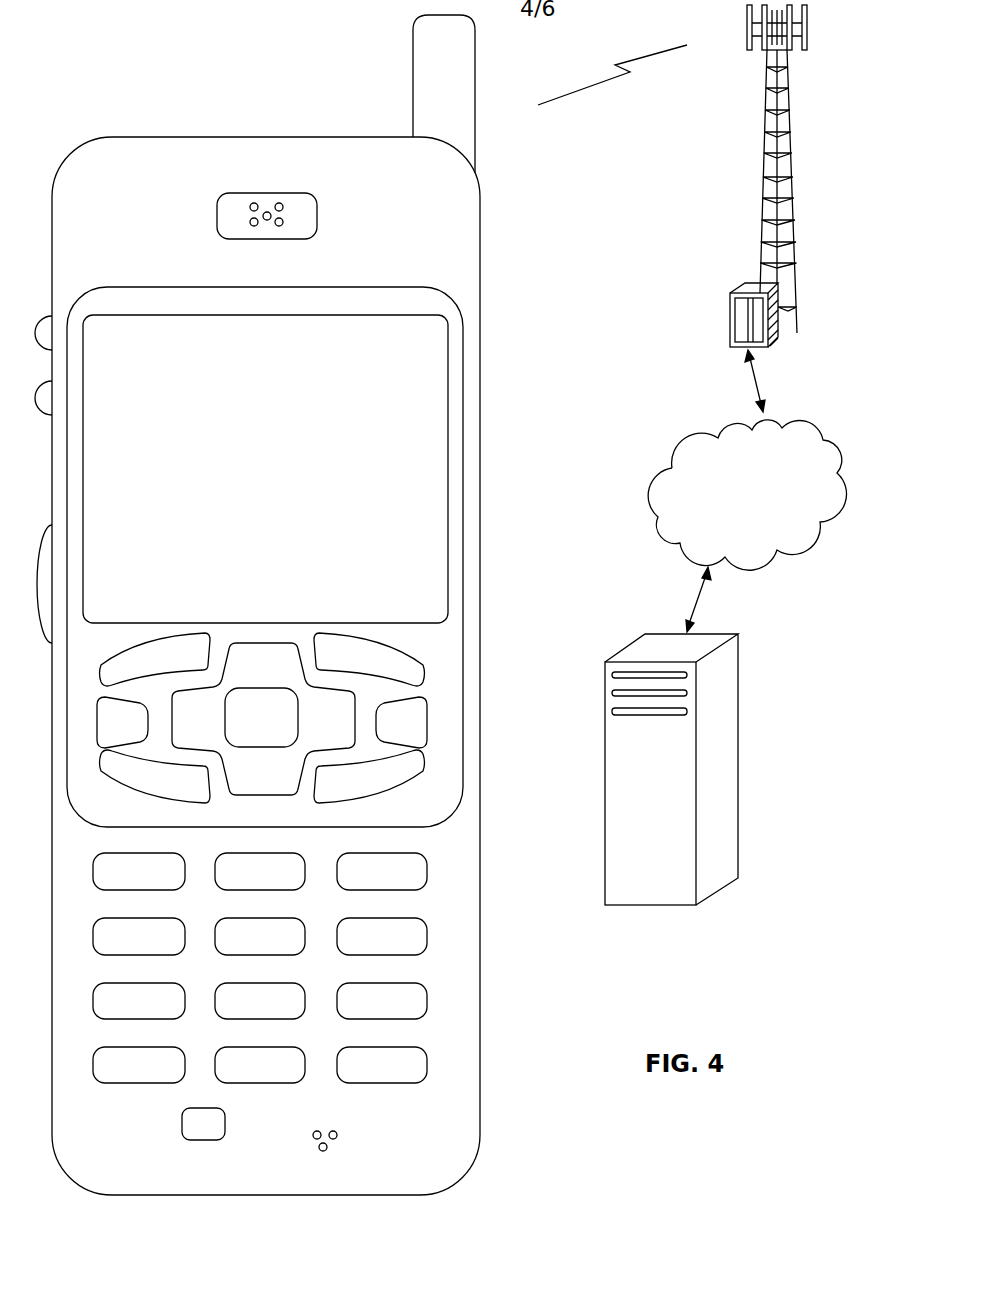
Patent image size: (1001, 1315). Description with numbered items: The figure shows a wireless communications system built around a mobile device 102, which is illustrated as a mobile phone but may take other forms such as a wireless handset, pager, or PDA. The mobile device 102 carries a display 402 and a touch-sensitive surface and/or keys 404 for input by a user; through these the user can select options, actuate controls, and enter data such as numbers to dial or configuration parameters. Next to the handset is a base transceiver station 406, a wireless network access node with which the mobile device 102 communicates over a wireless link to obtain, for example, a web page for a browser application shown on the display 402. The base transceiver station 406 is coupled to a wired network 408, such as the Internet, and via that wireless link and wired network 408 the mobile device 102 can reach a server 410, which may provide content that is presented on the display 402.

The mobile device 102 is at (100, 1195).
The display 402 is at (455, 330).
The keys 404 is at (487, 1093).
The base transceiver station 406 is at (760, 190).
The wired network 408 is at (665, 541).
The server 410 is at (648, 906).